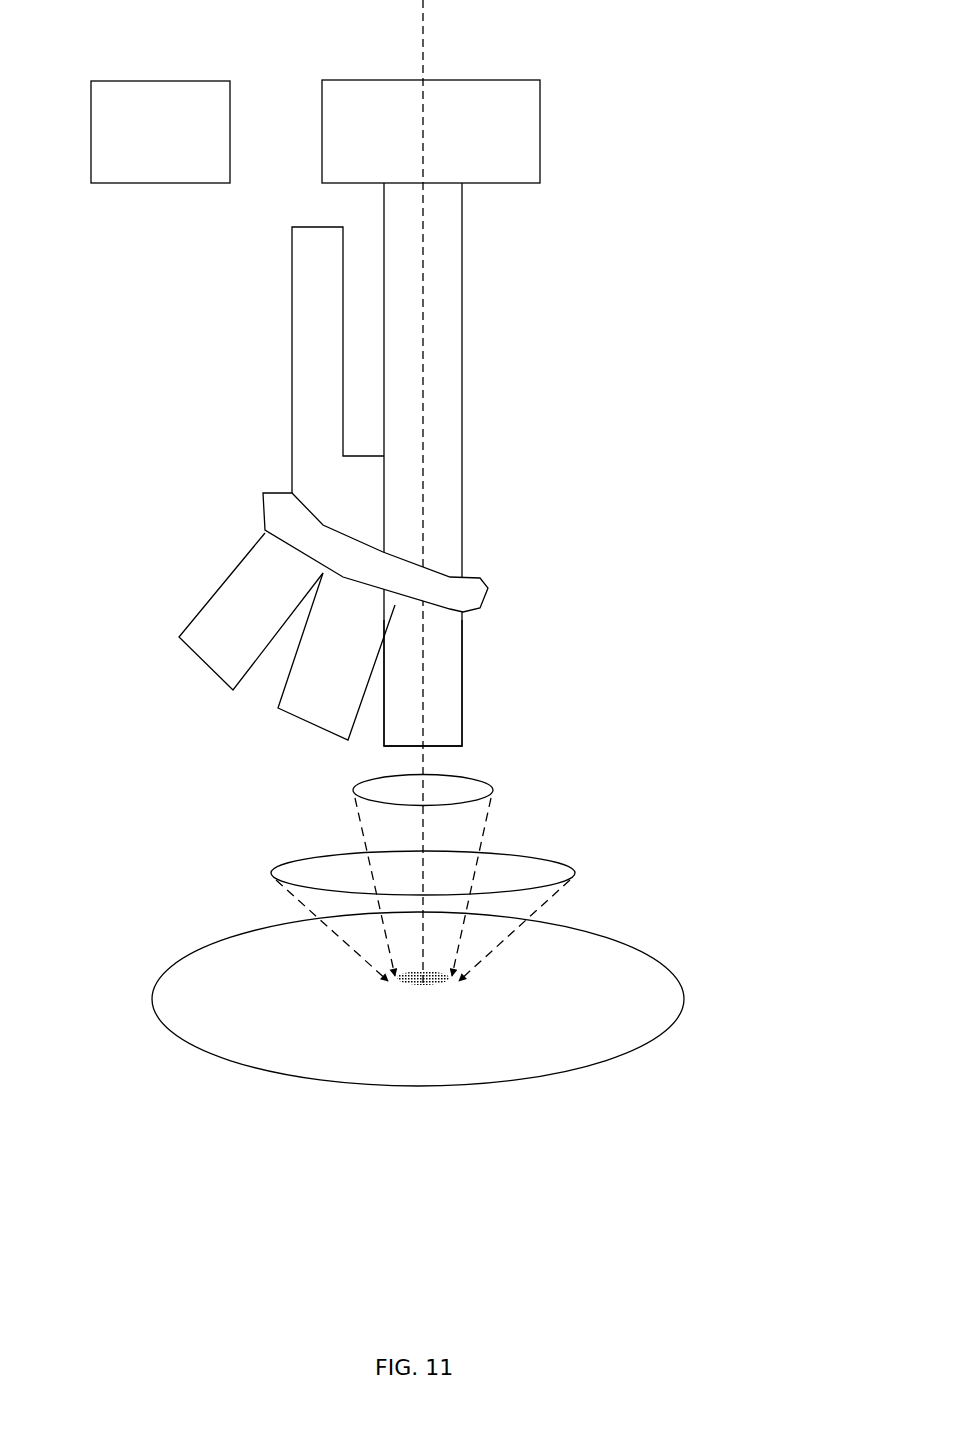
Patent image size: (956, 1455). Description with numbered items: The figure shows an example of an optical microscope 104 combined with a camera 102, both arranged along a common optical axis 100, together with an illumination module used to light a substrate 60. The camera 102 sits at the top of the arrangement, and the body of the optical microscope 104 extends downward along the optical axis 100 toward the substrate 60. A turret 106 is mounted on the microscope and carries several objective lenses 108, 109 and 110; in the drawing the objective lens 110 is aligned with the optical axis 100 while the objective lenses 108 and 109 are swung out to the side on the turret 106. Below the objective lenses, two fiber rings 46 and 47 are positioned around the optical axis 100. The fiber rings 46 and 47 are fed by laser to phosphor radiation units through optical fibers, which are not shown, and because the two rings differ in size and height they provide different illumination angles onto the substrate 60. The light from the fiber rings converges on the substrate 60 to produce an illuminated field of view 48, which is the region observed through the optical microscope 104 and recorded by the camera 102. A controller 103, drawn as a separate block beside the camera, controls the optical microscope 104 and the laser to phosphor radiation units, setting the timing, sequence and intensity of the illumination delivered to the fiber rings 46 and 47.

The optical axis 100 is at (423, 23).
The camera 102 is at (540, 145).
The controller 103 is at (178, 105).
The optical microscope 104 is at (463, 255).
The turret 106 is at (263, 510).
The objective lens 108 is at (193, 617).
The objective lens 109 is at (307, 726).
The objective lens 110 is at (463, 698).
The fiber ring 46 is at (357, 787).
The fiber ring 47 is at (273, 868).
The illuminated FOV 48 is at (430, 985).
The substrate 60 is at (398, 1068).